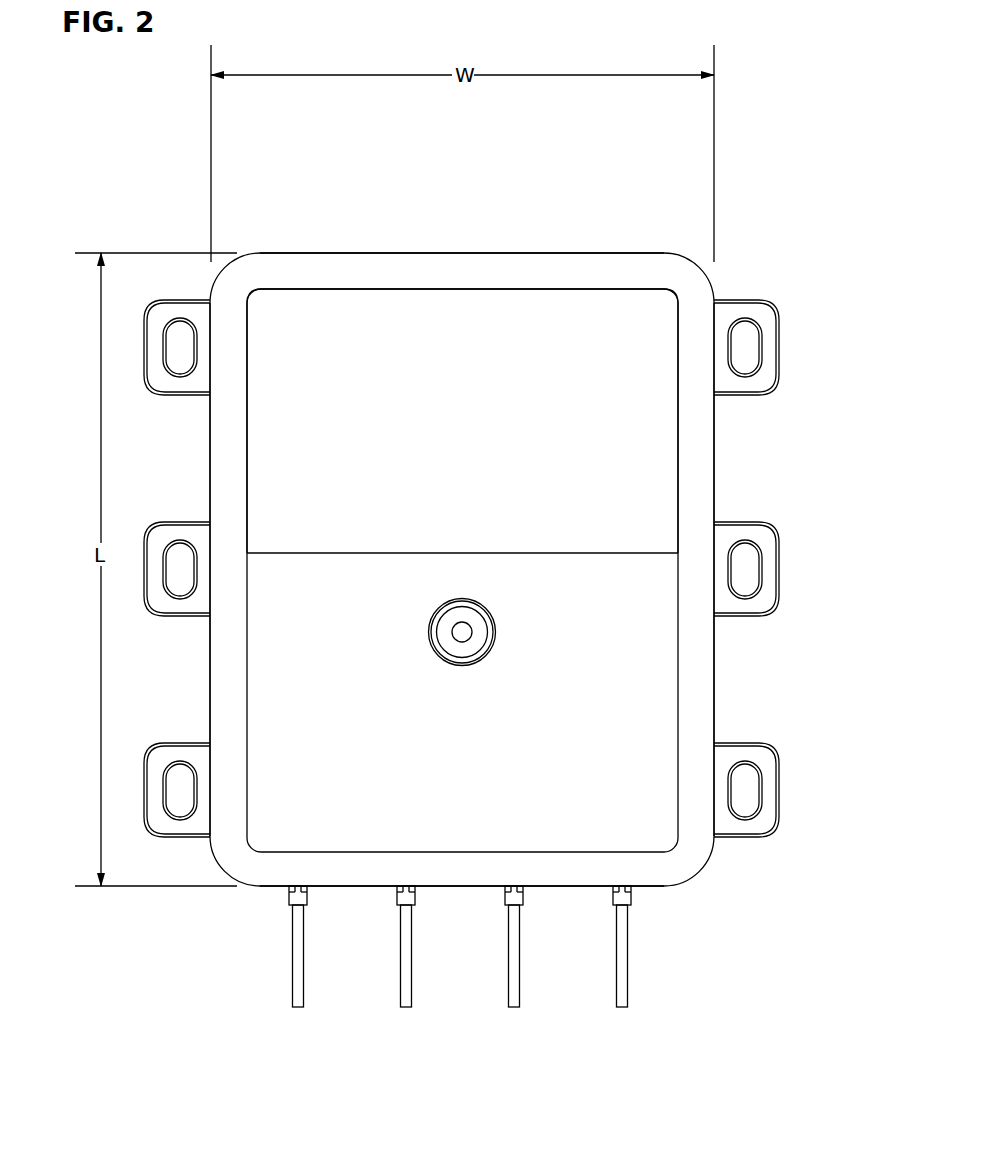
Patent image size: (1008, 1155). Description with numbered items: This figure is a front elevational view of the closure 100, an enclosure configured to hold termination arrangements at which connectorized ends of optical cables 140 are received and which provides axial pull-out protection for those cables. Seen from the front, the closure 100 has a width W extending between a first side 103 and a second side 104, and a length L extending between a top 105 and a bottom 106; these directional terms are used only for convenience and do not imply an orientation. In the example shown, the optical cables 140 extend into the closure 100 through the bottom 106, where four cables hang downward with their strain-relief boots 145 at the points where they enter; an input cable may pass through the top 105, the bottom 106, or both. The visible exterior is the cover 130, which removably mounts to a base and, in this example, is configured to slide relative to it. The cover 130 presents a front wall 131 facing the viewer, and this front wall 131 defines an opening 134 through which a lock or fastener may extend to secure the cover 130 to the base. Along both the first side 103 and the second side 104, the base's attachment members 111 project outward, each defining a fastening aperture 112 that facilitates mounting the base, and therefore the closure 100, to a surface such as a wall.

The closure 100 is at (366, 245).
The first side 103 is at (209, 436).
The second side 104 is at (716, 458).
The top 105 is at (462, 252).
The bottom 106 is at (462, 889).
The attachment members 111 is at (170, 299).
The fastening apertures 112 is at (749, 340).
The cover 130 is at (604, 284).
The front wall 131 is at (484, 432).
The opening 134 is at (472, 632).
The optical cables 140 is at (297, 1010).
The strain-relief boots 145 is at (289, 899).